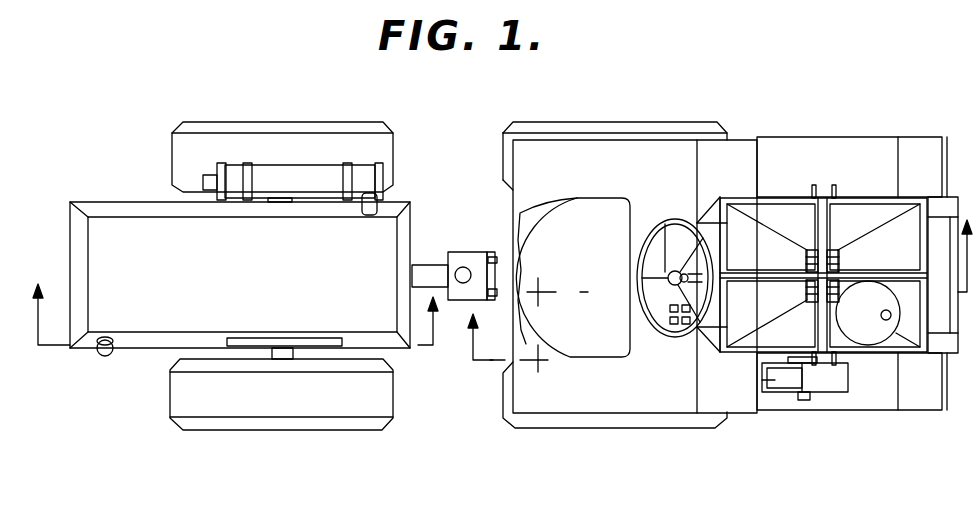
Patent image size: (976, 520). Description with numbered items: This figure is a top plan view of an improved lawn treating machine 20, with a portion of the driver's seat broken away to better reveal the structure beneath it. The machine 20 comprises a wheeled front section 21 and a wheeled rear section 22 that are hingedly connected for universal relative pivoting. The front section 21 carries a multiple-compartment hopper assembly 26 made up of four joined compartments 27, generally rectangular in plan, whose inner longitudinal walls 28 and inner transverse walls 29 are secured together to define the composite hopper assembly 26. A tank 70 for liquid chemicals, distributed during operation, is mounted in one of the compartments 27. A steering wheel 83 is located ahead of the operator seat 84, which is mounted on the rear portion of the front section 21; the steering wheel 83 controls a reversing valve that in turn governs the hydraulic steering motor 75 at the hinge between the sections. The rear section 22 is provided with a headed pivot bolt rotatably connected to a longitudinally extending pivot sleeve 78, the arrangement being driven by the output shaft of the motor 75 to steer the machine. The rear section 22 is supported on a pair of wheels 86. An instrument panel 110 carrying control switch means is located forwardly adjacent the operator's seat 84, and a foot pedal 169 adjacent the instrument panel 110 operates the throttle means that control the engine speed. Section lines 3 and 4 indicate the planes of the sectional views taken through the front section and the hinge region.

The lawn treating machine 20 is at (616, 89).
The front section 21 is at (788, 340).
The rear section 22 is at (133, 345).
The multiple-compartment hopper assembly 26 is at (768, 198).
The compartments 27 is at (848, 214).
The inner longitudinal walls 28 is at (770, 270).
The inner transverse walls 29 is at (816, 238).
The tank 70 is at (893, 345).
The hydraulic steering motor 75 is at (455, 256).
The pivot sleeve 78 is at (424, 270).
The steering wheel 83 is at (655, 222).
The operator seat 84 is at (580, 198).
The wheels 86 is at (383, 141).
The instrument panel 110 is at (663, 332).
The foot pedal 169 is at (772, 390).
The section line 3- 3 is at (717, 306).
The section line 4- 4 is at (232, 331).